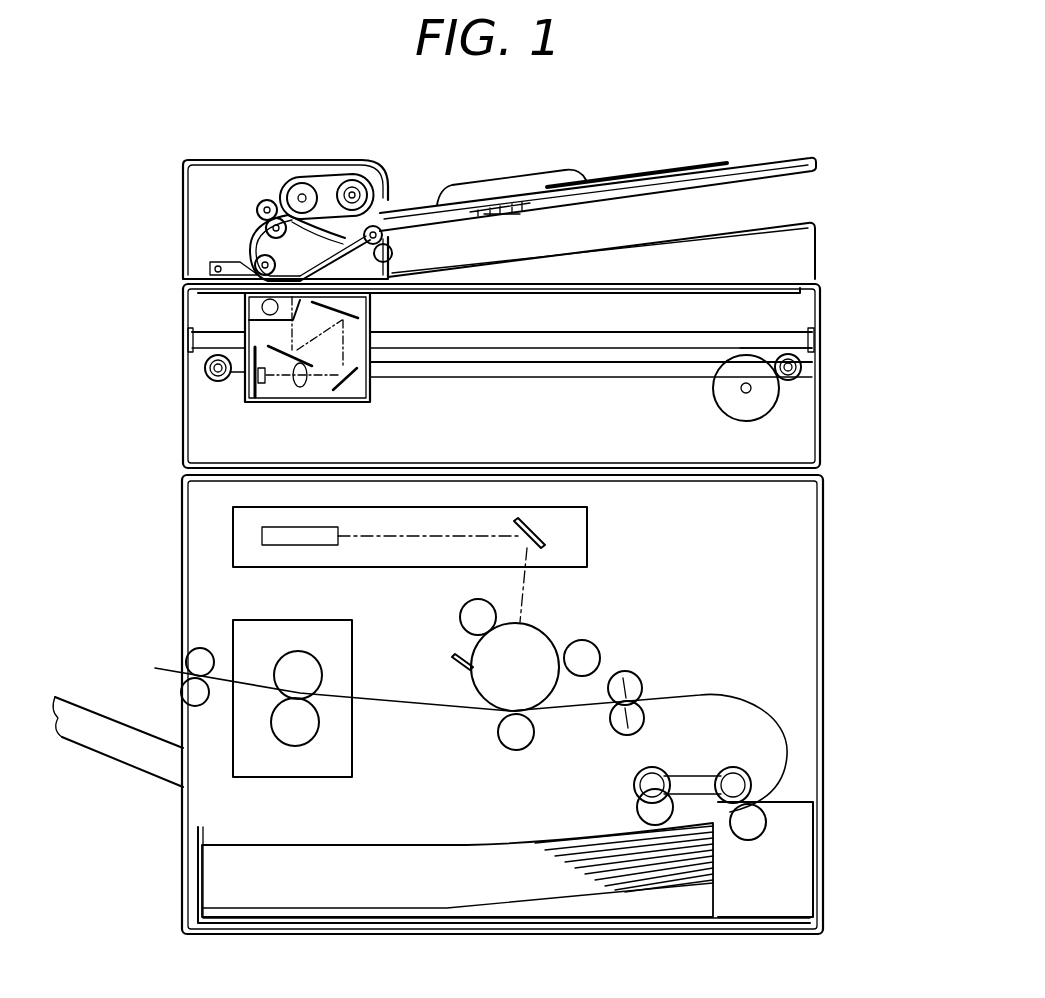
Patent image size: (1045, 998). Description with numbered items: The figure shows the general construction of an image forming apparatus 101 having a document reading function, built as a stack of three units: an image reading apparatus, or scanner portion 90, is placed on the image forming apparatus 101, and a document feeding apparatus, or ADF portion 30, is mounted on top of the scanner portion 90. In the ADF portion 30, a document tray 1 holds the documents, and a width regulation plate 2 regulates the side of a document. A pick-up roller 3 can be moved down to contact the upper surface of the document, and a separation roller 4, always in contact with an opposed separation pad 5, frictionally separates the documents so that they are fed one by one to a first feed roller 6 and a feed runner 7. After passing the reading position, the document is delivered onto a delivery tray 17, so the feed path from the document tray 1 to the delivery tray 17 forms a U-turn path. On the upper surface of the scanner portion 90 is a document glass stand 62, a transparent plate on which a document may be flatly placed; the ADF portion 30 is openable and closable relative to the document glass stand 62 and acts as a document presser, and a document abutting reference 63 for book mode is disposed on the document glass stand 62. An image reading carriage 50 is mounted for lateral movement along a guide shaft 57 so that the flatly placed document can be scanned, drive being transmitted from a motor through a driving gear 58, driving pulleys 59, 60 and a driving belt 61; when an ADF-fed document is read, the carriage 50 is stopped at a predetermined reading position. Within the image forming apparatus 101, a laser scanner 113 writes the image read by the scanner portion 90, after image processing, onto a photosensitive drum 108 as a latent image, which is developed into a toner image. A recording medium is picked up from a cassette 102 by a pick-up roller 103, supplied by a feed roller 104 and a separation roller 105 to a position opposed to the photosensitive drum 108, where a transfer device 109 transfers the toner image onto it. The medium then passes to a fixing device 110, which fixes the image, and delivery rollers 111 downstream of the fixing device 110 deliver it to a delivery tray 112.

The document tray 1 is at (798, 158).
The width regulation plate 2 is at (546, 173).
The pick-up roller 3 is at (353, 183).
The separation roller 4 is at (298, 184).
The separation pad 5 is at (311, 187).
The first feed roller 6 is at (256, 232).
The feed runner 7 is at (266, 201).
The delivery tray 17 is at (565, 244).
The document feeding apparatus (ADF portion) 30 is at (183, 186).
The image reading carriage 50 is at (305, 403).
The guide shaft 57 is at (793, 343).
The driving gear 58 is at (764, 403).
The driving pulley 59 is at (800, 378).
The driving pulley 60 is at (210, 382).
The driving belt 61 is at (610, 379).
The document glass stand 62 is at (778, 290).
The document abutting reference 63 is at (237, 291).
The image reading apparatus (scanner portion) 90 is at (183, 322).
The image forming apparatus 101 is at (822, 526).
The cassette 102 is at (795, 823).
The pick-up roller 103 is at (652, 773).
The feed roller 104 is at (743, 777).
The separation roller 105 is at (760, 832).
The photosensitive drum 108 is at (487, 697).
The transfer device 109 is at (511, 735).
The fixing device 110 is at (267, 779).
The delivery rollers 111 is at (196, 656).
The delivery tray 112 is at (123, 747).
The laser scanner 113 is at (233, 533).